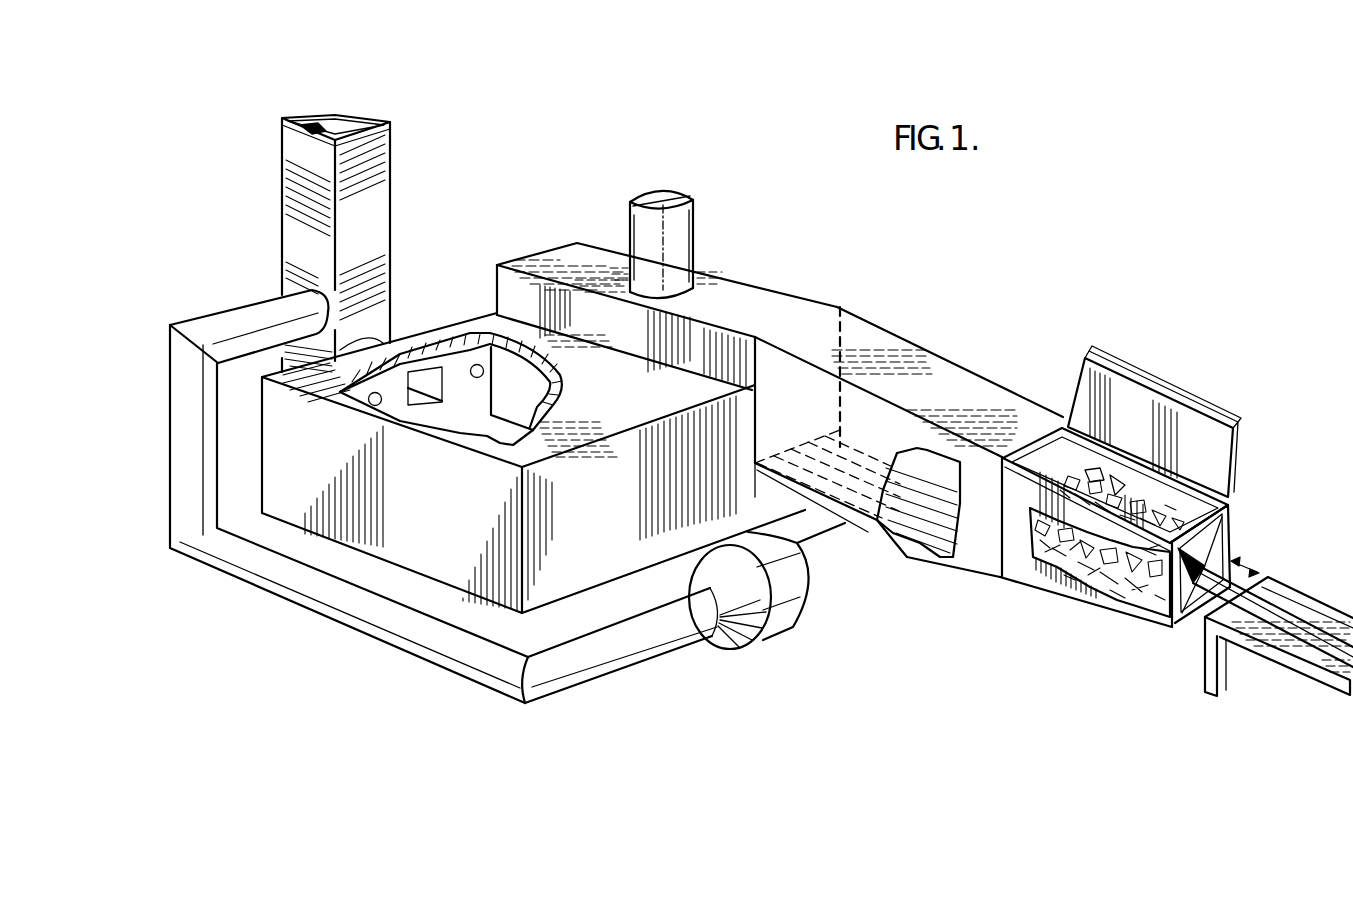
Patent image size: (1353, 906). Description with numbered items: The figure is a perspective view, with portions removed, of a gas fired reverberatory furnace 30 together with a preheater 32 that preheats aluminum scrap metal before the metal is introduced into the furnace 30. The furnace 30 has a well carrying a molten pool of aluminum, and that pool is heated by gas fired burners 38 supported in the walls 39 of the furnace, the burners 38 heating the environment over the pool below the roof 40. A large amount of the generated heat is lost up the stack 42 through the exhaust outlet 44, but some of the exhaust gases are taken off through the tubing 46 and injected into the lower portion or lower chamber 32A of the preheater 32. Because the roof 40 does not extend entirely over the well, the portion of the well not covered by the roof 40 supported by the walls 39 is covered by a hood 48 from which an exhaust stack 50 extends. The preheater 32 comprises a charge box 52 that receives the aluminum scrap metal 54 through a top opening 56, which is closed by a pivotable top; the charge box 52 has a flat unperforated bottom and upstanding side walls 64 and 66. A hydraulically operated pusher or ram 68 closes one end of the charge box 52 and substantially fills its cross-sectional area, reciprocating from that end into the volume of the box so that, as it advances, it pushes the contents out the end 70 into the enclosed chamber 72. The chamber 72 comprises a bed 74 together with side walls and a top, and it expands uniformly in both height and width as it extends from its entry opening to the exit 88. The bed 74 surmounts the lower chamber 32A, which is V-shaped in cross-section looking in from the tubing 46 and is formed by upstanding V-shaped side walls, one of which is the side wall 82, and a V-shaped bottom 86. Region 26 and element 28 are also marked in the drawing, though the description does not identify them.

The passage 26 is at (865, 404).
The duct 28 is at (947, 380).
The gas fired reverberatory furnace 30 is at (438, 532).
The preheater 32 is at (1003, 580).
The lower chamber 32A is at (896, 550).
The gas fired burners 38 is at (476, 364).
The walls 39 is at (480, 421).
The roof 40 is at (523, 378).
The stack 42 is at (377, 223).
The exhaust outlet 44 is at (427, 418).
The tubing 46 is at (238, 315).
The hood 48 is at (771, 298).
The exhaust stack 50 is at (700, 244).
The charge box 52 is at (1240, 498).
The aluminum scrap metal 54 is at (1163, 512).
The top opening 56 is at (1073, 455).
The side wall 64 is at (1030, 506).
The side wall 66 is at (1115, 462).
The pusher 68 is at (1214, 551).
The end 70 is at (1045, 458).
The enclosed chamber 72 is at (908, 338).
The bed 74 is at (922, 497).
The V-shaped side wall 82 is at (921, 565).
The V-shaped bottom 86 is at (958, 578).
The exit 88 is at (826, 325).